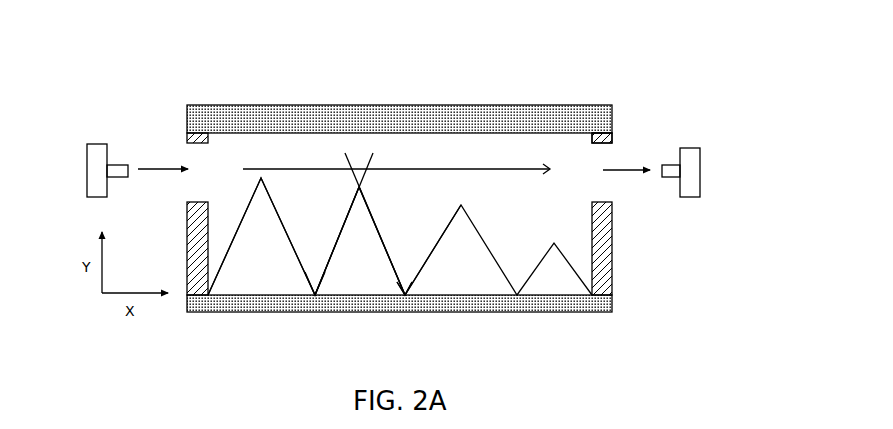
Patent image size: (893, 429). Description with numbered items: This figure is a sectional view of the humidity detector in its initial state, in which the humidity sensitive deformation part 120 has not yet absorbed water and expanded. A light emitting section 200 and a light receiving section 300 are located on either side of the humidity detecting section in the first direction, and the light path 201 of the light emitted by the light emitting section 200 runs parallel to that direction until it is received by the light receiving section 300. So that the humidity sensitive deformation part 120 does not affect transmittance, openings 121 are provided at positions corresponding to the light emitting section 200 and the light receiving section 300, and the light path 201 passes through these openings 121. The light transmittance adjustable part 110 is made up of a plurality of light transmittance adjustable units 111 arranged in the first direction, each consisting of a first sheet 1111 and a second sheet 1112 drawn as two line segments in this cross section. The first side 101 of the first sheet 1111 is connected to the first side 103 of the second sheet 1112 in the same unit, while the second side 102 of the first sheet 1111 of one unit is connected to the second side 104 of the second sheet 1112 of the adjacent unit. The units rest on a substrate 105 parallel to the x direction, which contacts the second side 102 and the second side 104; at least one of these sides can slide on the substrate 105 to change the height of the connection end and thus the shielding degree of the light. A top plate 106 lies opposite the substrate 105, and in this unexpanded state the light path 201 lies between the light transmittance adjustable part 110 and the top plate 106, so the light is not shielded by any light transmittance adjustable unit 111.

The light emitting section 200 is at (81, 161).
The light receiving section 300 is at (708, 160).
The light path 201 is at (401, 121).
The first side of the first sheet 101 is at (345, 153).
The first side of the second sheet 103 is at (373, 153).
The top plate 106 is at (418, 110).
The substrate 105 is at (420, 317).
The humidity sensitive deformation part 120 is at (646, 248).
The openings 121 is at (654, 187).
The light transmittance adjustable part 110 is at (389, 253).
The light transmittance adjustable unit 111 is at (251, 259).
The first sheet 1111 is at (428, 261).
The second sheet 1112 is at (401, 239).
The second side of the first sheet 102 is at (378, 306).
The second side of the second sheet 104 is at (384, 311).